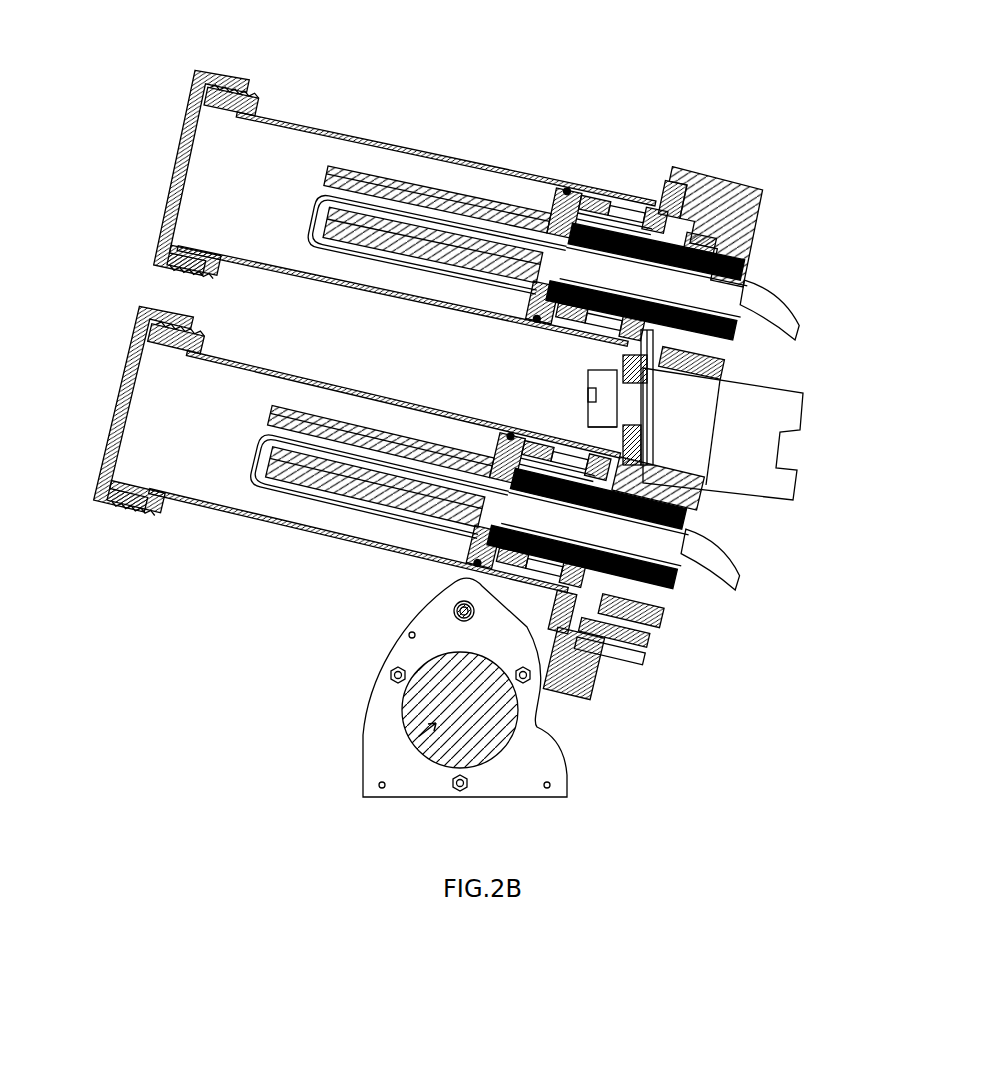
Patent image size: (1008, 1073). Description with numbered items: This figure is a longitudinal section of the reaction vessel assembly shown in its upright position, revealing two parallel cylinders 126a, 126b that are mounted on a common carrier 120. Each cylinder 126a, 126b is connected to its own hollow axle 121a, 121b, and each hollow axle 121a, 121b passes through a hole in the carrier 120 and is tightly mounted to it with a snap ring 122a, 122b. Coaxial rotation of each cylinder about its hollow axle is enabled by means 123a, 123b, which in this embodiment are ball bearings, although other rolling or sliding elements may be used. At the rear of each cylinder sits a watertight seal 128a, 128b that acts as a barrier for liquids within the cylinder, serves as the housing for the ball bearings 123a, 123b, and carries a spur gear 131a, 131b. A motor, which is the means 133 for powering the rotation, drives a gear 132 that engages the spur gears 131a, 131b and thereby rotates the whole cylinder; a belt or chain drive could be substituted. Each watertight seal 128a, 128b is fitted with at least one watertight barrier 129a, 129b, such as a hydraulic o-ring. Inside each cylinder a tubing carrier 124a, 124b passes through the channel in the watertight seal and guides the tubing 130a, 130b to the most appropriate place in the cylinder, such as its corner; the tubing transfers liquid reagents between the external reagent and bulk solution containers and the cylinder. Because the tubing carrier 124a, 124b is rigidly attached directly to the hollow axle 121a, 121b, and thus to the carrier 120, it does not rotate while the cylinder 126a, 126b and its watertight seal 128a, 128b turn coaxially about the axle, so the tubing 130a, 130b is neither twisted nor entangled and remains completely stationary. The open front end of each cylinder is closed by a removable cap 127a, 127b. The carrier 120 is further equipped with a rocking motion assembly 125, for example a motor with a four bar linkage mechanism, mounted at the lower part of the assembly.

The carrier 120 is at (757, 184).
The hollow axle 121a is at (742, 328).
The hollow axle 121b is at (675, 573).
The snap ring 122a is at (738, 252).
The snap ring 122b is at (693, 503).
The means for enabling coaxial rotation 123a is at (567, 192).
The means for enabling coaxial rotation 123b is at (472, 572).
The tubing carrier 124a is at (340, 182).
The tubing carrier 124b is at (285, 425).
The rocking motion assembly 125 is at (410, 758).
The cylinder 126a is at (430, 150).
The cylinder 126b is at (300, 533).
The removable cap 127a is at (203, 72).
The removable cap 127b is at (110, 505).
The watertight seal 128a is at (512, 207).
The watertight seal 128b is at (362, 430).
The watertight barrier 129a is at (540, 325).
The watertight barrier 129b is at (510, 437).
The tubing 130a is at (325, 265).
The tubing 130b is at (280, 525).
The spur gear 131a is at (685, 170).
The spur gear 131b is at (585, 673).
The gear 132 is at (593, 394).
The means for powering the rotation 133 is at (765, 446).